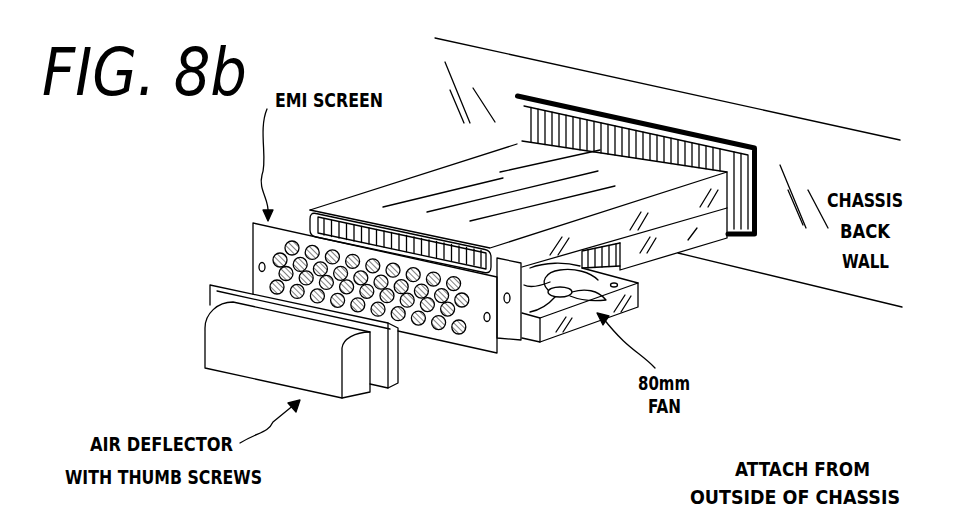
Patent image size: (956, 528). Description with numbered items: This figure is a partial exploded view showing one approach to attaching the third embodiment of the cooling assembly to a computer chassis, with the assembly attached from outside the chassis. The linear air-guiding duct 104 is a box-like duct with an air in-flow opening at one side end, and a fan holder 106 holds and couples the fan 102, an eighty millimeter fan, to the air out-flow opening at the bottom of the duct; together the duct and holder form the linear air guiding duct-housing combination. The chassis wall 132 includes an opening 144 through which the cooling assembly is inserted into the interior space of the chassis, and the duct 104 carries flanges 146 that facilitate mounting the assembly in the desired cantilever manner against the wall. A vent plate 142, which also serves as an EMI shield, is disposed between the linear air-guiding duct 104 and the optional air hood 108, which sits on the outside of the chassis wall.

The fan 102 is at (558, 345).
The linear air-guiding duct 104 is at (436, 174).
The fan holder 106 is at (667, 252).
The air hood 108 is at (221, 363).
The chassis wall 132 is at (770, 122).
The vent plate 142 is at (255, 252).
The opening 144 is at (642, 119).
The flanges 146 is at (510, 333).